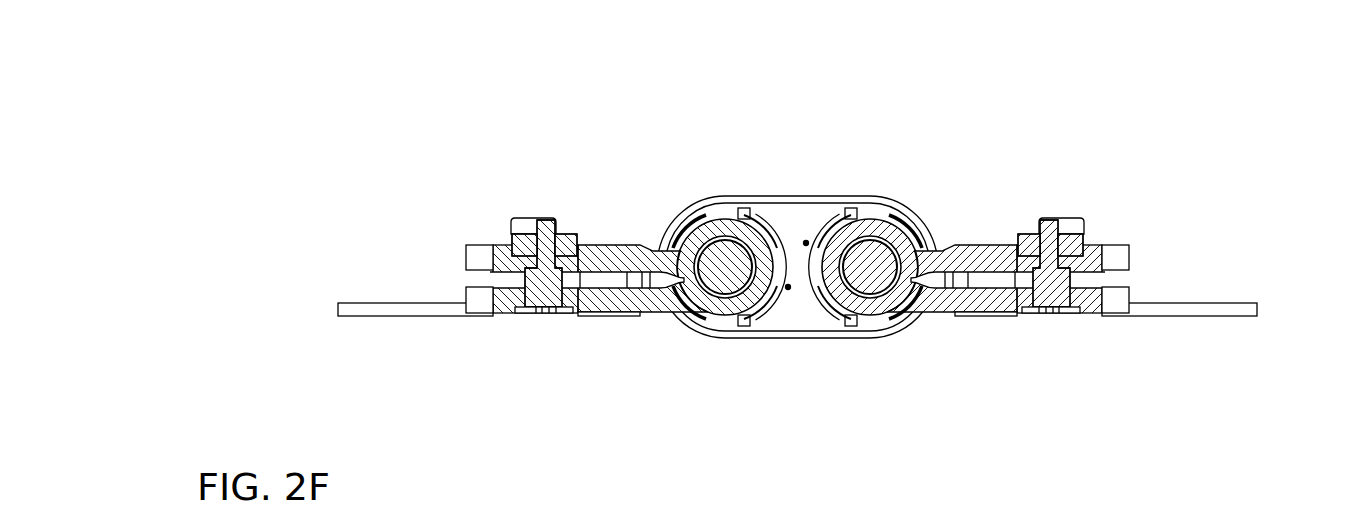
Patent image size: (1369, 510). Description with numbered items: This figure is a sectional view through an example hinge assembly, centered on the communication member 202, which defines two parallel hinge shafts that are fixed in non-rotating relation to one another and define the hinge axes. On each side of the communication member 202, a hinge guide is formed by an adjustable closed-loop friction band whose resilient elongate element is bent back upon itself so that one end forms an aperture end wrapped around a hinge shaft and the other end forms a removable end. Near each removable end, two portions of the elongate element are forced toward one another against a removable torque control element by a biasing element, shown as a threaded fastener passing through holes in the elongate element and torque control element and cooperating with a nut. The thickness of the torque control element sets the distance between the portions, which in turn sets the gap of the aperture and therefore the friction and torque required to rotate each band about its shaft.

The communication member 202 is at (785, 195).